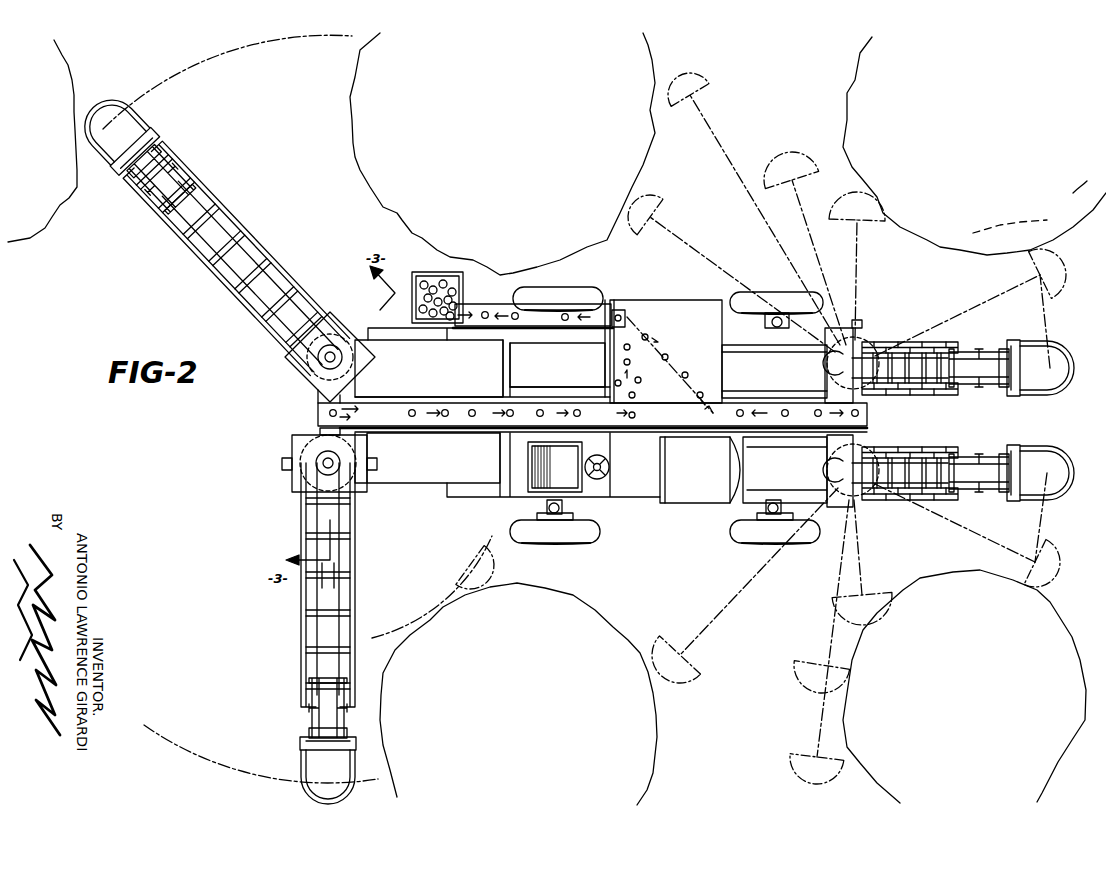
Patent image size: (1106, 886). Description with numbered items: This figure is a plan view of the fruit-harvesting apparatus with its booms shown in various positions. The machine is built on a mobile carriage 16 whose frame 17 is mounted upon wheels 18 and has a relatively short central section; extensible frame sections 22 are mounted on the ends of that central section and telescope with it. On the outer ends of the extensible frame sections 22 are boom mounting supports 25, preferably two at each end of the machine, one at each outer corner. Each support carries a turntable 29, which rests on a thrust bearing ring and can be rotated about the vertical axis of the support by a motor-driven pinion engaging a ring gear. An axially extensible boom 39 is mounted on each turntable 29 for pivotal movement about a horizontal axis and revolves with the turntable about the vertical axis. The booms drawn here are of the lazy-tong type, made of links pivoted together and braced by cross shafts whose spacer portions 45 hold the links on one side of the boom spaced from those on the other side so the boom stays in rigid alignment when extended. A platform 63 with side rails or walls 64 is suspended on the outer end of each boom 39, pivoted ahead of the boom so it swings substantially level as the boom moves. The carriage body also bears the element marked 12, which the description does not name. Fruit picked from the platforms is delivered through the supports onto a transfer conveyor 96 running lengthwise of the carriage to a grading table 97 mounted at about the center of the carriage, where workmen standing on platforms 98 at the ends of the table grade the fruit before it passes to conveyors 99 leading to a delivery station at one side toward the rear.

The motor housing 12 is at (710, 480).
The mobile carriage 16 is at (518, 495).
The frame 17 is at (487, 338).
The wheels 18 is at (580, 292).
The extensible frame sections 22 is at (400, 488).
The boom mounting support 25 is at (363, 365).
The turntable 29 is at (360, 443).
The axially extensible boom 39 is at (247, 231).
The spacer portions 45 is at (338, 570).
The platform 63 is at (138, 133).
The side rails or walls 64 is at (103, 160).
The transfer conveyor 96 is at (444, 423).
The grading table 97 is at (670, 305).
The platforms 98 is at (513, 374).
The conveyors 99 is at (512, 300).